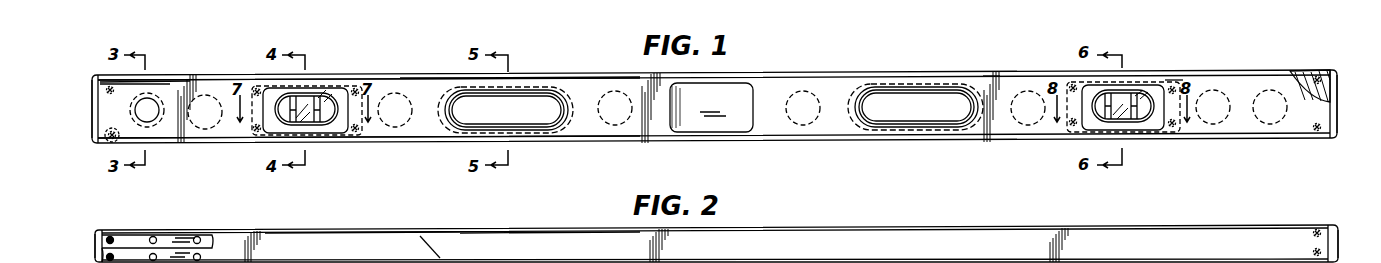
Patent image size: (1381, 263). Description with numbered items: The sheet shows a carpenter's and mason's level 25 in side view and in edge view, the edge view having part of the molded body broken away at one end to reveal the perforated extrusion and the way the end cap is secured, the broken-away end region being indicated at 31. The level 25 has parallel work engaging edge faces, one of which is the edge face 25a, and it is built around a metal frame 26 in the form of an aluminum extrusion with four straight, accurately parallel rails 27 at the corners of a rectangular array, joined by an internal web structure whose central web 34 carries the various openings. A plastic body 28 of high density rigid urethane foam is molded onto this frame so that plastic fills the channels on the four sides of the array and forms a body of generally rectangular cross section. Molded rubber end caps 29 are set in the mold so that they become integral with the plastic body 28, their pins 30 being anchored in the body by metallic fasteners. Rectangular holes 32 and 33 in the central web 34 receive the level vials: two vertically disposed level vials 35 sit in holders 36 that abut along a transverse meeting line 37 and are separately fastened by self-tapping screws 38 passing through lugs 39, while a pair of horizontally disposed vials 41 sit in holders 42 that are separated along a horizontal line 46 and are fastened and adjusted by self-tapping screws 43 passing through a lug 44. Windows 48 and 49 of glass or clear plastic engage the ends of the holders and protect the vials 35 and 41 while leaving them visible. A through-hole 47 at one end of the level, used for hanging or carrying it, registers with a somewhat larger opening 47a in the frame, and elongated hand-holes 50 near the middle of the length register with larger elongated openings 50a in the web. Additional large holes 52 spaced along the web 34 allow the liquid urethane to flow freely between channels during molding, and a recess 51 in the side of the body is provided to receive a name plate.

In FIG. 1, the carpenter's level 25 is at (841, 65).
In FIG. 2, the carpenter's level 25 is at (876, 224).
In FIG. 2, the work engaging edge face 25a is at (424, 247).
In FIG. 1, the metal frame 26 is at (374, 160).
In FIG. 1, the rail 27 is at (165, 78).
In FIG. 2, the rail 27 is at (282, 235).
In FIG. 1, the plastic body 28 is at (423, 83).
In FIG. 2, the plastic body 28 is at (473, 243).
In FIG. 1, the end cap 29 is at (92, 85).
In FIG. 2, the end cap 29 is at (95, 240).
In FIG. 1, the pin 30 is at (110, 136).
In FIG. 2, the pin 30 is at (110, 238).
In FIG. 1, the end plate 31 is at (118, 140).
In FIG. 2, the end plate 31 is at (130, 245).
In FIG. 1, the rectangular hole 32 is at (330, 95).
In FIG. 1, the rectangular hole 33 is at (1137, 82).
In FIG. 1, the central web 34 is at (983, 73).
In FIG. 1, the level vial 35 is at (307, 90).
In FIG. 1, the holder 36 is at (277, 136).
In FIG. 1, the transverse meeting line 37 is at (315, 138).
In FIG. 1, the self-tapping screw 38 is at (257, 132).
In FIG. 1, the lug 39 is at (207, 75).
In FIG. 1, the vial 41 is at (1150, 87).
In FIG. 1, the holder 42 is at (1082, 78).
In FIG. 1, the self-tapping screw 43 is at (1070, 126).
In FIG. 1, the lug 44 is at (1060, 78).
In FIG. 1, the horizontal line 46 is at (1183, 73).
In FIG. 1, the through-hole 47 is at (147, 114).
In FIG. 1, the opening 47a is at (147, 92).
In FIG. 1, the window 48 is at (337, 107).
In FIG. 1, the window 49 is at (1118, 95).
In FIG. 1, the hand-hole 50 is at (530, 105).
In FIG. 1, the elongated opening 50a is at (510, 85).
In FIG. 1, the recess 51 is at (740, 97).
In FIG. 1, the large hole 52 is at (615, 92).